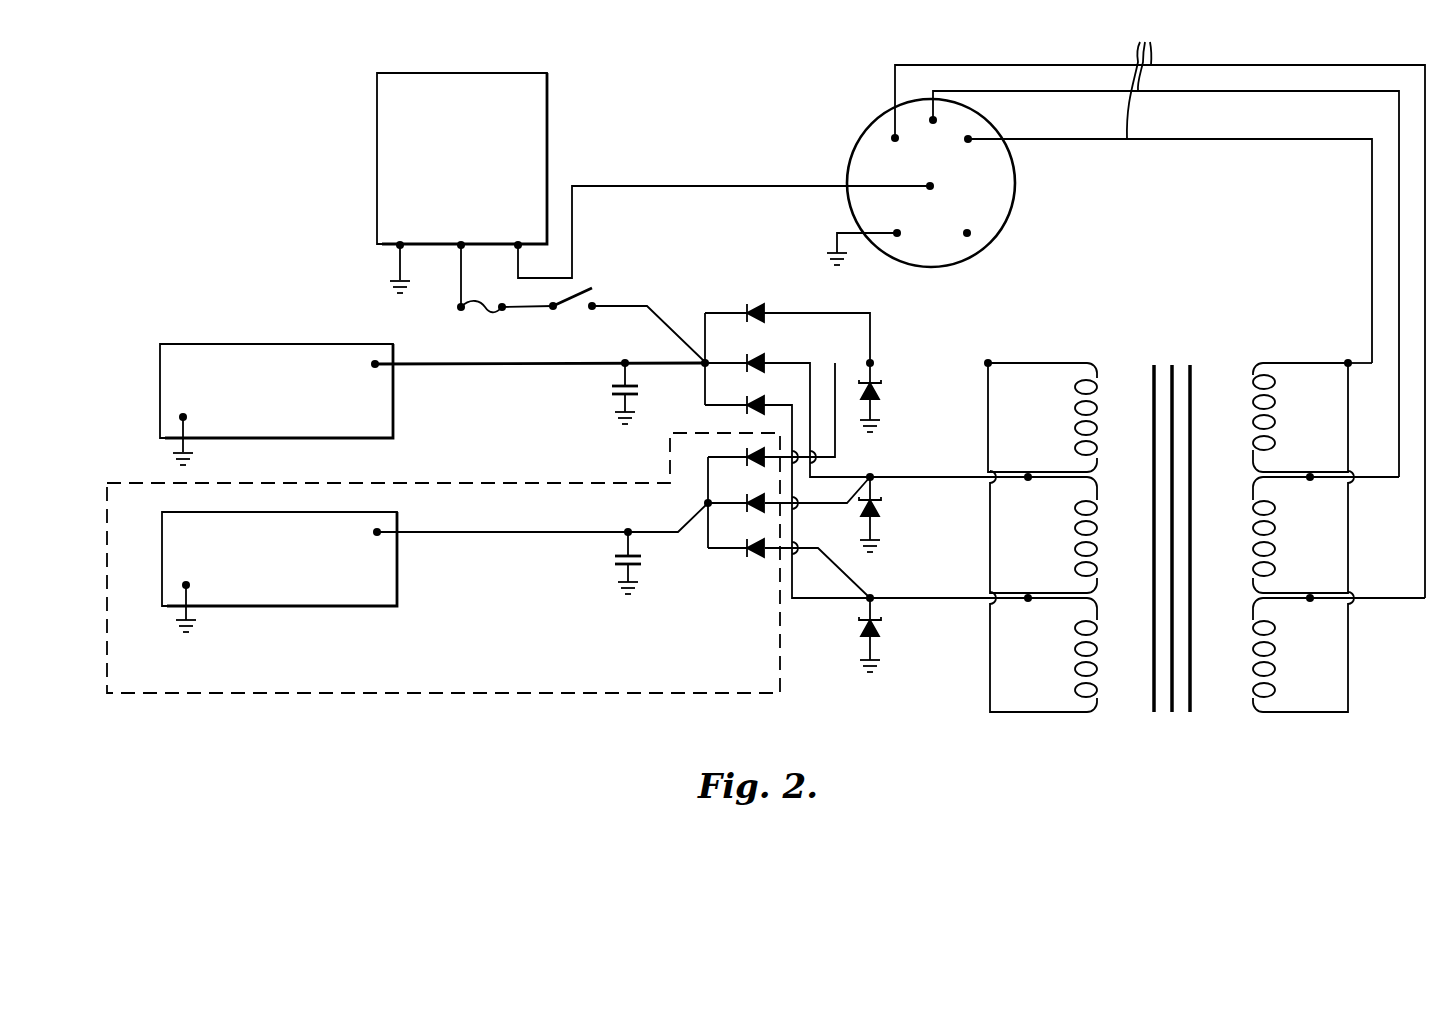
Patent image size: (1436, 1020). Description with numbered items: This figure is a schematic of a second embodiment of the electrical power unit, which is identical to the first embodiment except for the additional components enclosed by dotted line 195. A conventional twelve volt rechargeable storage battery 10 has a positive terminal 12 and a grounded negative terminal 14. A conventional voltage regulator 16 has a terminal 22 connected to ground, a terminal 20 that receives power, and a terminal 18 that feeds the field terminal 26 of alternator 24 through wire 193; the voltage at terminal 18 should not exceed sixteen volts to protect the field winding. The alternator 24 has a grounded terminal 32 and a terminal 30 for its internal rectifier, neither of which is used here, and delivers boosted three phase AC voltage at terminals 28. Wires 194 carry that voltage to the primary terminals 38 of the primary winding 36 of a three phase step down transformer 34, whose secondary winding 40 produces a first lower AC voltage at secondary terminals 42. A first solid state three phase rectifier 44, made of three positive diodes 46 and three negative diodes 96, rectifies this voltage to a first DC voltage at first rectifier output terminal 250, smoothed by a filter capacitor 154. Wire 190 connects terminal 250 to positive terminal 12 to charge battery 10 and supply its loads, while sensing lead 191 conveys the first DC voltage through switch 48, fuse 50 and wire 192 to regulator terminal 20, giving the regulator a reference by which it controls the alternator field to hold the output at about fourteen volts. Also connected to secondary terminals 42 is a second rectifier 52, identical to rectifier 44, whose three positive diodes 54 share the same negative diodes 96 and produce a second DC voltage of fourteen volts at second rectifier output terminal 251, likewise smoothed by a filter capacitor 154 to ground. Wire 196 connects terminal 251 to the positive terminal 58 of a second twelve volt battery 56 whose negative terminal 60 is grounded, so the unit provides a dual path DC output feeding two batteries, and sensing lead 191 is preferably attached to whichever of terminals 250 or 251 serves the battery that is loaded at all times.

The battery 10 is at (161, 377).
The positive terminal 12 is at (371, 366).
The ground terminal 14 is at (188, 417).
The voltage regulator 16 is at (373, 176).
The regulator terminal 18 is at (518, 243).
The regulator terminal 20 is at (461, 243).
The regulator terminal 22 is at (400, 243).
The alternator 24 is at (849, 156).
The field terminal 26 is at (936, 190).
The alternator terminals 28 is at (963, 143).
The alternator DC terminal 30 is at (966, 230).
The alternator ground terminal 32 is at (897, 231).
The step down transformer 34 is at (1174, 302).
The primary winding 36 is at (1282, 342).
The primary terminals 38 is at (1350, 368).
The secondary winding 40 is at (1068, 346).
The secondary terminals 42 is at (990, 367).
The first rectifier 44 is at (798, 300).
The positive diodes 46 is at (768, 320).
The switch 48 is at (584, 290).
The fuse 50 is at (490, 311).
The second rectifier 52 is at (699, 568).
The positive diodes 54 is at (750, 470).
The second battery 56 is at (162, 548).
The positive terminal 58 is at (372, 536).
The negative terminal 60 is at (192, 584).
The negative diodes 96 is at (880, 392).
The filter capacitor 154 is at (608, 402).
The wire 190 is at (491, 366).
The sensing lead 191 is at (660, 323).
The wire 192 is at (460, 286).
The wire 193 is at (683, 190).
The wires 194 is at (1126, 81).
The dotted line 195 is at (412, 697).
The wire 196 is at (472, 533).
The first rectifier output terminal 250 is at (702, 368).
The second rectifier output terminal 251 is at (702, 505).